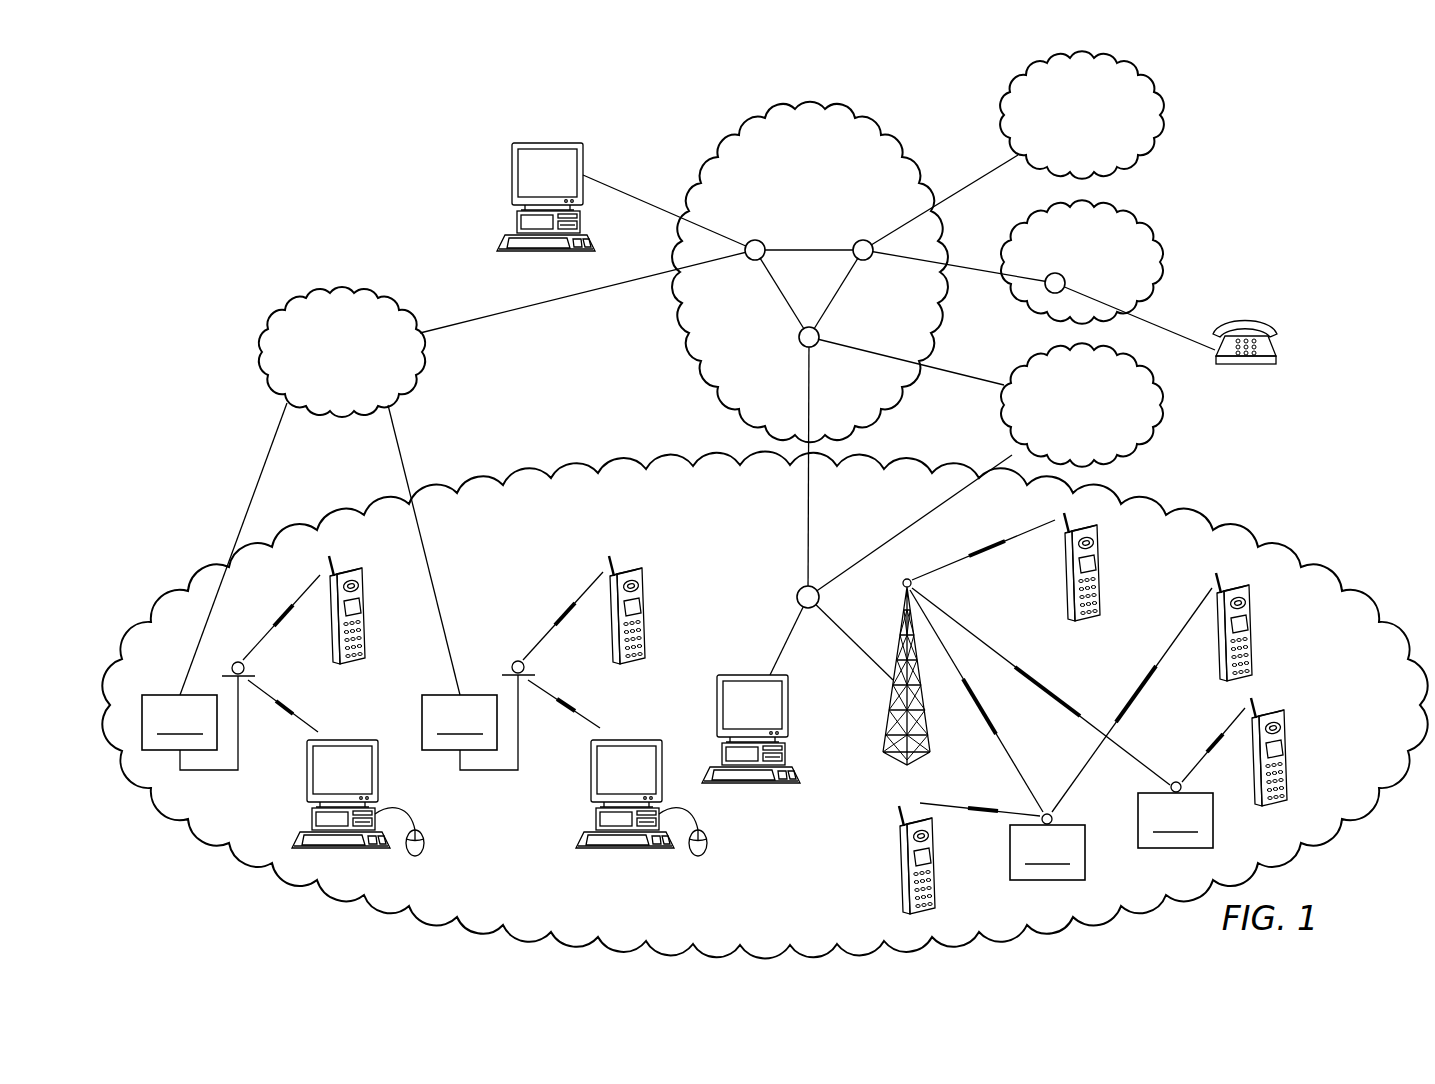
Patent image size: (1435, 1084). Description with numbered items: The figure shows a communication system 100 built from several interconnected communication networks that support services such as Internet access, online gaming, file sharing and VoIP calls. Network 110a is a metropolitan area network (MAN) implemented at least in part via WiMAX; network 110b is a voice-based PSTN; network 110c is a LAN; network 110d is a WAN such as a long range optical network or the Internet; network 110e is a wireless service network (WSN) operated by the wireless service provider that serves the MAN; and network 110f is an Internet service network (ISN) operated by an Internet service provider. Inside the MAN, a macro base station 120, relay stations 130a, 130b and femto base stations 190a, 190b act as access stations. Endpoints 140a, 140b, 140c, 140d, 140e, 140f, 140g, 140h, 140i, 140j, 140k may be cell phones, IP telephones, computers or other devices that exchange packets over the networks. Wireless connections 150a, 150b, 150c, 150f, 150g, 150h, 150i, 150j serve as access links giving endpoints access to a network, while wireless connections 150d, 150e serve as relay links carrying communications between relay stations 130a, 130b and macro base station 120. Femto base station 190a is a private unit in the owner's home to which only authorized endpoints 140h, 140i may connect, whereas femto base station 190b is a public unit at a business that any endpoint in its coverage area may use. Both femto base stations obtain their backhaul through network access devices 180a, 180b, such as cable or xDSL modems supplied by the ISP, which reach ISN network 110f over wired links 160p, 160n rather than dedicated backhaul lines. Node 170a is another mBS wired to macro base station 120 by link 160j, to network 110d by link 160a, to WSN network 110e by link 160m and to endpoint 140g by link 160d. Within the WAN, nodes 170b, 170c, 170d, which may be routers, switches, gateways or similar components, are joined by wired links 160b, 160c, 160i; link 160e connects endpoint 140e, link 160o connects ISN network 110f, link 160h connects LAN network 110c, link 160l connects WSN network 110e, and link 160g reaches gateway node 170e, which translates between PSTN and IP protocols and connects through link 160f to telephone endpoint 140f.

The communication system 100 is at (345, 146).
The MAN network 110a is at (588, 458).
The PSTN network 110b is at (1163, 232).
The LAN network 110c is at (1167, 117).
The WAN network 110d is at (742, 125).
The WSN network 110e is at (1165, 405).
The ISN network 110f is at (257, 338).
The macro base station 120 is at (888, 722).
The relay station 130a is at (1047, 847).
The relay station 130b is at (1175, 815).
The endpoint 140a is at (898, 883).
The endpoint 140b is at (1257, 617).
The endpoint 140c is at (1102, 561).
The endpoint 140d is at (1292, 737).
The endpoint 140e is at (548, 143).
The endpoint 140f is at (1245, 320).
The endpoint 140g is at (802, 750).
The endpoint 140h is at (360, 672).
The endpoint 140i is at (303, 820).
The endpoint 140j is at (583, 820).
The endpoint 140k is at (636, 673).
The wireless connection 150a is at (1220, 738).
The wireless connection 150b is at (1166, 648).
The wireless connection 150c is at (1000, 545).
The wireless connection 150d is at (1008, 756).
The wireless connection 150e is at (1065, 700).
The wireless connection 150f is at (988, 813).
The wireless connection 150g is at (292, 604).
The wireless connection 150h is at (298, 720).
The wireless connection 150i is at (578, 714).
The wireless connection 150j is at (585, 592).
The wired link 160a is at (805, 542).
The wired link 160b is at (778, 291).
The wired link 160c is at (848, 292).
The wired link 160d is at (781, 652).
The wired link 160e is at (640, 200).
The wired link 160f is at (1178, 334).
The wired link 160g is at (972, 271).
The wired link 160h is at (975, 183).
The wired link 160i is at (815, 248).
The wired link 160j is at (848, 636).
The wired link 160l is at (963, 377).
The wired link 160m is at (884, 545).
The wired link 160n is at (403, 455).
The wired link 160o is at (582, 296).
The wired link 160p is at (263, 462).
The node 170a is at (797, 593).
The node 170b is at (799, 341).
The node 170c is at (753, 240).
The node 170d is at (866, 240).
The node 170e is at (1057, 273).
The network access device 180a is at (190, 723).
The network access device 180b is at (470, 722).
The femto base station 190a is at (252, 668).
The femto base station 190b is at (510, 667).